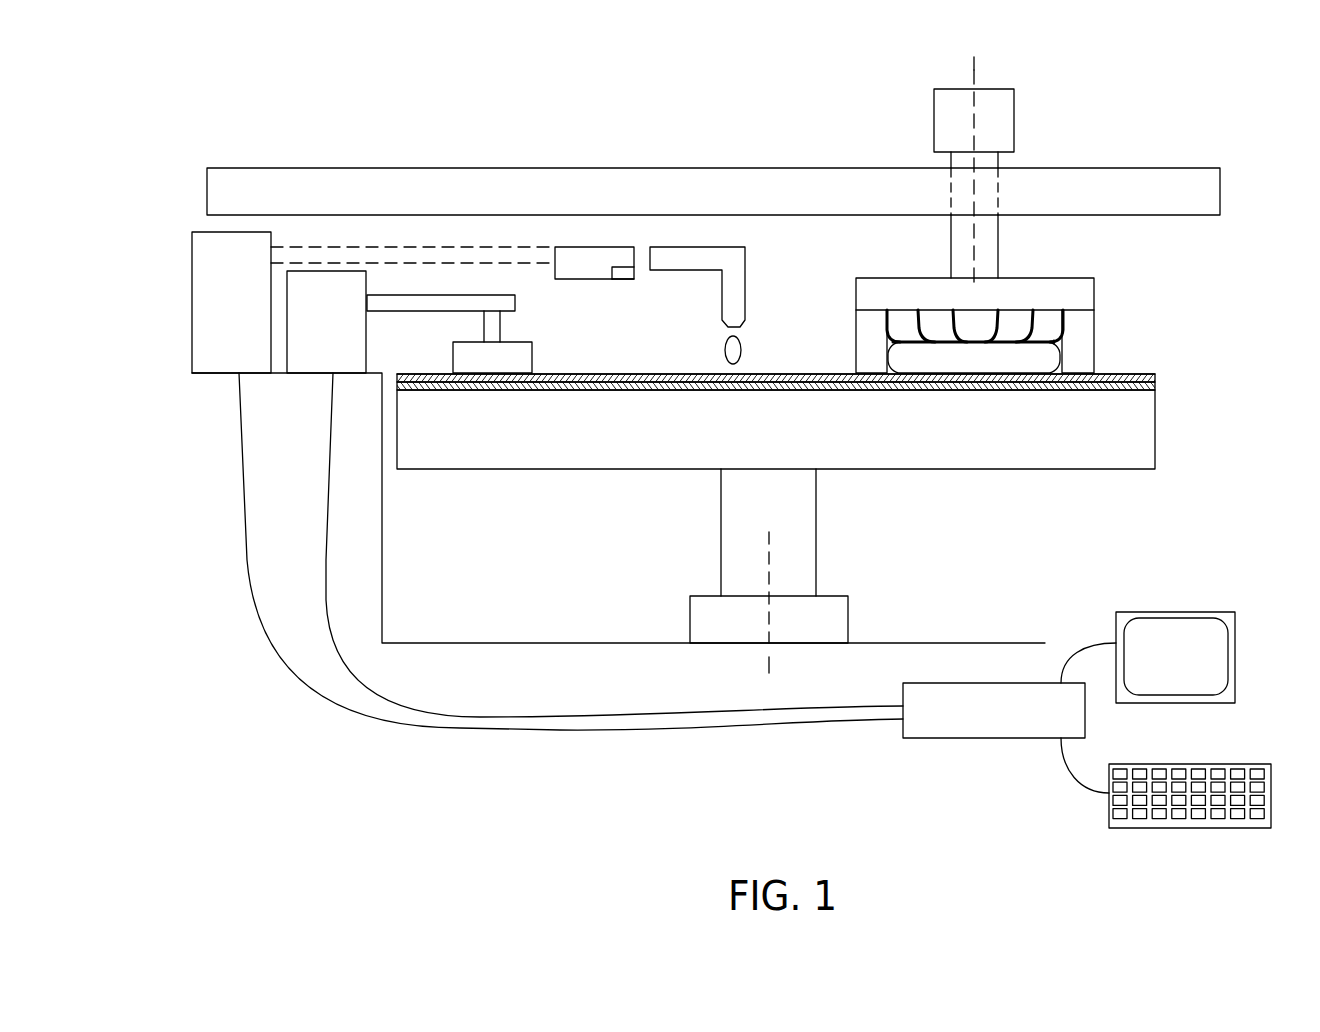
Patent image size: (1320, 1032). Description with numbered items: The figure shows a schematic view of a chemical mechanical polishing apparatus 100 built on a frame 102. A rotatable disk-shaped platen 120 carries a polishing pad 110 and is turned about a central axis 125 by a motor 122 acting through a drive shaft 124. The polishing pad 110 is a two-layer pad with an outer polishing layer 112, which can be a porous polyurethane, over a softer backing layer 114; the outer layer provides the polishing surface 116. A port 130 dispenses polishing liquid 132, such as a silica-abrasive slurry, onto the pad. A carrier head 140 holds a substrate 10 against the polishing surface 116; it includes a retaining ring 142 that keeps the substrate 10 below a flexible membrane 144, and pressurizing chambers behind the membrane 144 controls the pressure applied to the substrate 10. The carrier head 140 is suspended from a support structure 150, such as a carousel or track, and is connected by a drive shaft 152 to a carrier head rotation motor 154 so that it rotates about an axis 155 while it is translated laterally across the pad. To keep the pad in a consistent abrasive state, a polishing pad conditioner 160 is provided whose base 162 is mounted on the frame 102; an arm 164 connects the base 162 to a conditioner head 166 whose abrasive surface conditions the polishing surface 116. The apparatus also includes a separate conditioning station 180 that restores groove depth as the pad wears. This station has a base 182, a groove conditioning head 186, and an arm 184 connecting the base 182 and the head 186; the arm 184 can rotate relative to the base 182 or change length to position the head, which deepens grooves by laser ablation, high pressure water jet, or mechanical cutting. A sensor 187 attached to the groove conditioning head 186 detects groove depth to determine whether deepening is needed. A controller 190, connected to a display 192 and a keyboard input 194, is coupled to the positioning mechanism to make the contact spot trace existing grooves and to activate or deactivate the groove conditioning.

The substrate 10 is at (974, 357).
The polishing apparatus 100 is at (260, 123).
The frame 102 is at (382, 552).
The polishing pad 110 is at (854, 368).
The outer polishing layer 112 is at (1160, 378).
The backing layer 114 is at (1160, 390).
The polishing surface 116 is at (1140, 373).
The platen 120 is at (1157, 437).
The motor 122 is at (690, 632).
The drive shaft 124 is at (816, 540).
The axis 125 is at (769, 657).
The port 130 is at (722, 292).
The polishing liquid 132 is at (725, 350).
The carrier head 140 is at (836, 324).
The retaining ring 142 is at (1095, 343).
The flexible membrane 144 is at (1030, 343).
The support structure 150 is at (1188, 168).
The drive shaft 152 is at (951, 262).
The carrier head rotation motor 154 is at (934, 130).
The axis 155 is at (974, 70).
The polishing pad conditioner 160 is at (390, 286).
The base 162 is at (340, 375).
The arm 164 is at (475, 313).
The conditioner head 166 is at (510, 340).
The conditioning station 180 is at (446, 240).
The base 182 is at (210, 375).
The arm 184 is at (483, 245).
The groove conditioning head 186 is at (594, 263).
The sensor 187 is at (614, 279).
The controller 190 is at (937, 738).
The display 192 is at (1220, 703).
The keyboard input 194 is at (1203, 828).